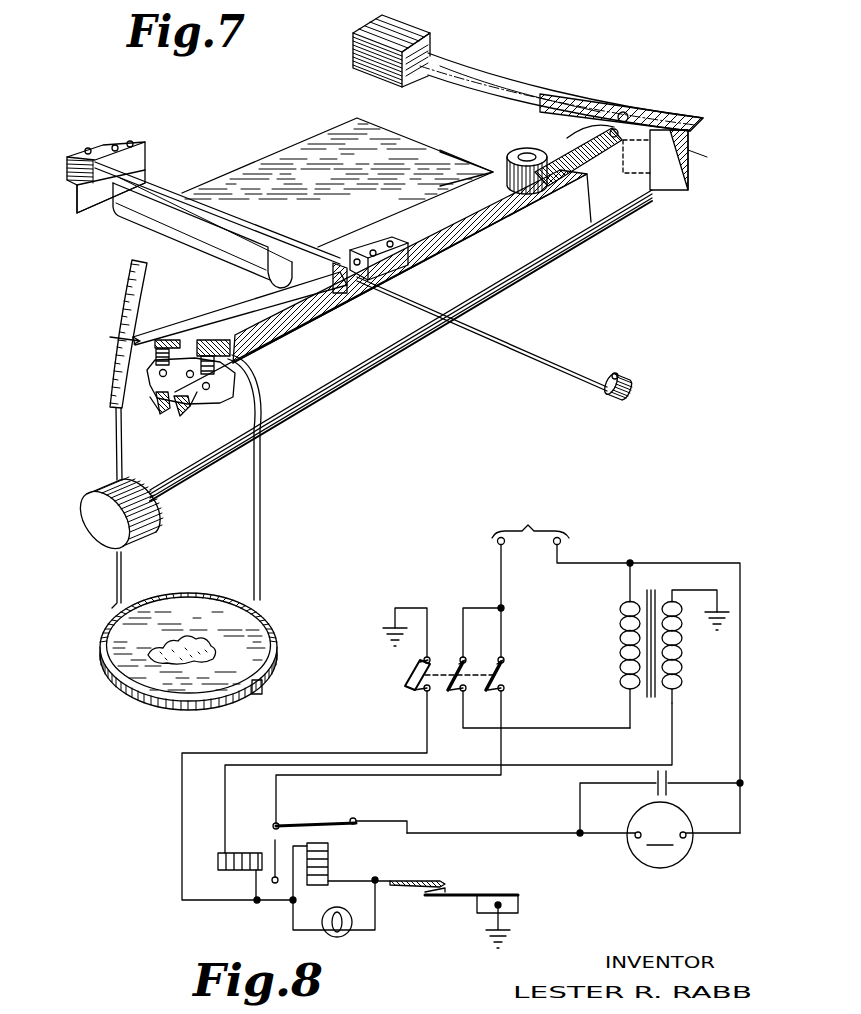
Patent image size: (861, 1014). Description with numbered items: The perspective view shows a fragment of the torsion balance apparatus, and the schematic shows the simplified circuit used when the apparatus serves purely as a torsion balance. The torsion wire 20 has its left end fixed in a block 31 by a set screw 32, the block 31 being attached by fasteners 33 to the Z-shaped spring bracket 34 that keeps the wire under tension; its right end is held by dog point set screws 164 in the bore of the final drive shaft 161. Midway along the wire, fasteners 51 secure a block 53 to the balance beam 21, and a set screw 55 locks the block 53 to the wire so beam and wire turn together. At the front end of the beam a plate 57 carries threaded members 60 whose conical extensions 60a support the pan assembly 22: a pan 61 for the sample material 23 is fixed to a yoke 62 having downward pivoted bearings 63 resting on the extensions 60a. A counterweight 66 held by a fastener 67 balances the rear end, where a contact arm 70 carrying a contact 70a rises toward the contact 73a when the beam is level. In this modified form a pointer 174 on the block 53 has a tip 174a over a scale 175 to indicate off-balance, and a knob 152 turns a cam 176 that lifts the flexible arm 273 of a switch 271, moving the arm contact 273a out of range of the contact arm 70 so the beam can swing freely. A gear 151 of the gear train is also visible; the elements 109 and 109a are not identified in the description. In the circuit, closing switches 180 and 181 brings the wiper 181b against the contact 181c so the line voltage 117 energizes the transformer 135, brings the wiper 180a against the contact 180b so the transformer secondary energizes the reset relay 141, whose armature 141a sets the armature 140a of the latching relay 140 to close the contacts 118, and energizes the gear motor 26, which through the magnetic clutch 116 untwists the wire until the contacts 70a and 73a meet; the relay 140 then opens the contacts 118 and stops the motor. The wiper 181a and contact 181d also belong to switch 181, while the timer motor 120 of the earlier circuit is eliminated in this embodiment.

In FIG. 7, the switch 271 is at (400, 32).
In FIG. 7, the arm 273 is at (568, 100).
In FIG. 7, the arm contact 273a is at (627, 113).
In FIG. 7, the cam 176 is at (700, 144).
In FIG. 7, the platform 109a is at (296, 160).
In FIG. 7, the tray 109 is at (150, 212).
In FIG. 7, the block 31 is at (66, 165).
In FIG. 7, the set screw 32 is at (88, 146).
In FIG. 7, the fasteners 33 is at (130, 140).
In FIG. 7, the spring bracket 34 is at (76, 205).
In FIG. 7, the balance beam 21 is at (505, 232).
In FIG. 8, the balance beam 21 is at (518, 906).
In FIG. 7, the gear 151 is at (545, 258).
In FIG. 7, the counterweight 66 is at (506, 170).
In FIG. 7, the fastener 67 is at (526, 150).
In FIG. 7, the contact arm 70 is at (602, 152).
In FIG. 7, the contact 70a is at (610, 130).
In FIG. 8, the contact 70a is at (430, 897).
In FIG. 7, the block 53 is at (408, 270).
In FIG. 7, the set screw 55 is at (356, 258).
In FIG. 7, the fasteners 51 is at (390, 240).
In FIG. 7, the pointer 174 is at (248, 308).
In FIG. 7, the tip 174a is at (112, 340).
In FIG. 7, the scale 175 is at (127, 283).
In FIG. 7, the plate 57 is at (195, 414).
In FIG. 7, the conical pivotal extensions 60a is at (200, 400).
In FIG. 7, the threaded members 60 is at (190, 379).
In FIG. 7, the pivoted bearings 63 is at (195, 355).
In FIG. 7, the pan assembly 22 is at (262, 480).
In FIG. 7, the yoke 62 is at (116, 430).
In FIG. 7, the knob 152 is at (103, 490).
In FIG. 7, the torsion wire 20 is at (507, 336).
In FIG. 7, the final drive shaft 161 is at (630, 378).
In FIG. 7, the dog point set screws 164 is at (615, 372).
In FIG. 7, the pan 61 is at (125, 690).
In FIG. 7, the material 23 is at (185, 642).
In FIG. 8, the line voltage 117 is at (530, 513).
In FIG. 8, the switch 180 is at (399, 707).
In FIG. 8, the wiper 180a is at (416, 666).
In FIG. 8, the contact 180b is at (422, 694).
In FIG. 8, the switch 181 is at (516, 678).
In FIG. 8, the wiper 181a is at (506, 664).
In FIG. 8, the wiper 181b is at (457, 655).
In FIG. 8, the contact 181c is at (498, 692).
In FIG. 8, the contact 181d is at (460, 692).
In FIG. 8, the transformer 135 is at (684, 650).
In FIG. 8, the magnetic clutch 116 is at (668, 778).
In FIG. 8, the gear motor 26 is at (573, 835).
In FIG. 8, the armature 140a is at (315, 822).
In FIG. 8, the contacts 118 is at (350, 815).
In FIG. 8, the armature 141a is at (270, 847).
In FIG. 8, the reset relay 141 is at (232, 872).
In FIG. 8, the latching relay 140 is at (330, 860).
In FIG. 8, the timer motor 120 is at (340, 935).
In FIG. 8, the contact 73a is at (445, 880).